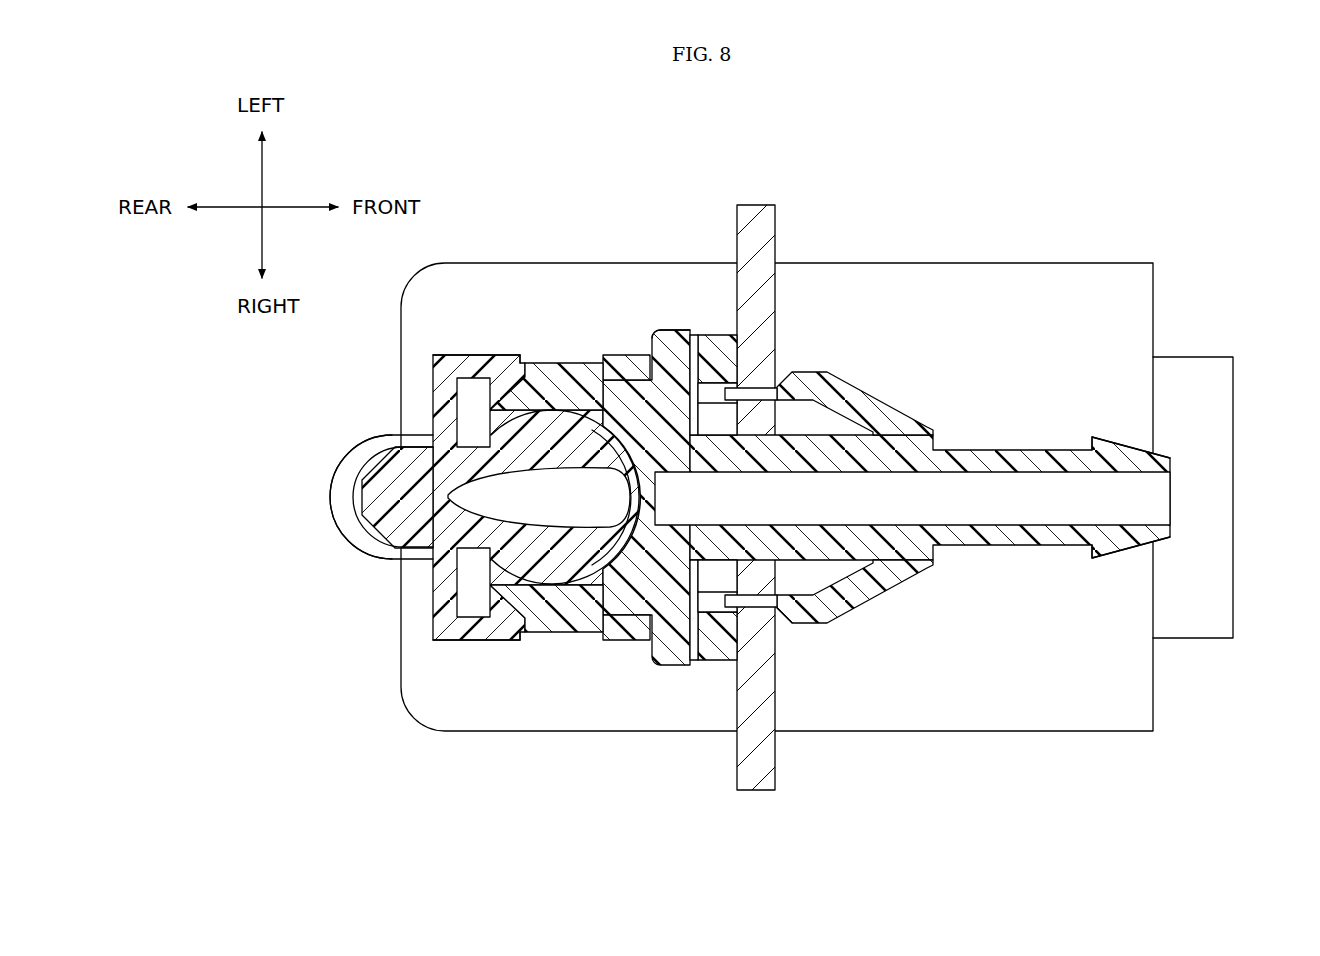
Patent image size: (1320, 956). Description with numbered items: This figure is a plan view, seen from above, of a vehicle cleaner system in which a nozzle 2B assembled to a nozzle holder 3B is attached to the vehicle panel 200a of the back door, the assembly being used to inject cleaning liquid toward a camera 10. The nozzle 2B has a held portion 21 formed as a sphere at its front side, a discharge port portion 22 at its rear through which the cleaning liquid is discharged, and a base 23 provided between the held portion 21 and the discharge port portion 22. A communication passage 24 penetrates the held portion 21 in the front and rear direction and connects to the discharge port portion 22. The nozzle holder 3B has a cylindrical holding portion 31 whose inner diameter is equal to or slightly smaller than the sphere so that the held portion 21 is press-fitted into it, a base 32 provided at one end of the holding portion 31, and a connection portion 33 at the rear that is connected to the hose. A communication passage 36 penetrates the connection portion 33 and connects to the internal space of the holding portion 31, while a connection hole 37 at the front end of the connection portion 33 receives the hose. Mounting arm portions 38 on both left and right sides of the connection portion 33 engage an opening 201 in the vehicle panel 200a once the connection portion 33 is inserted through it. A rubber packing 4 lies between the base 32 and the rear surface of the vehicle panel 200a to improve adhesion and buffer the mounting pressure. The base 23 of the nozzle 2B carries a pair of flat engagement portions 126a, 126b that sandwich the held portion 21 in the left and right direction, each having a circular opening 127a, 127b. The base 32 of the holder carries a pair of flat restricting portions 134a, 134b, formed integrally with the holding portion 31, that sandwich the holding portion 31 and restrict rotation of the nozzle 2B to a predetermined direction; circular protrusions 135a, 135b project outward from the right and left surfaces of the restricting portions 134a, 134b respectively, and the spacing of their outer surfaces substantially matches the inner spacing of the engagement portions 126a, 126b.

The camera 10 is at (997, 710).
The vehicle panel 200a is at (775, 770).
The opening 201 is at (765, 577).
The held portion 21 is at (540, 560).
The discharge port portion 22 is at (333, 515).
The base 23 is at (440, 583).
The communication passage 24 is at (610, 493).
The nozzle 2B is at (348, 436).
The nozzle holder 3B is at (670, 318).
The holding portion 31 is at (707, 353).
The base 32 is at (672, 357).
The connection portion 33 is at (1040, 448).
The communication passage 36 is at (1148, 490).
The connection hole 37 is at (1130, 452).
The mounting arm portions 38 is at (865, 400).
The packing 4 is at (712, 648).
The engagement portion 126a is at (502, 632).
The engagement portion 126b is at (500, 362).
The opening 127a is at (535, 635).
The opening 127b is at (522, 372).
The restricting portion 134a is at (622, 620).
The restricting portion 134b is at (610, 367).
The protrusion 135a is at (585, 618).
The protrusion 135b is at (583, 365).